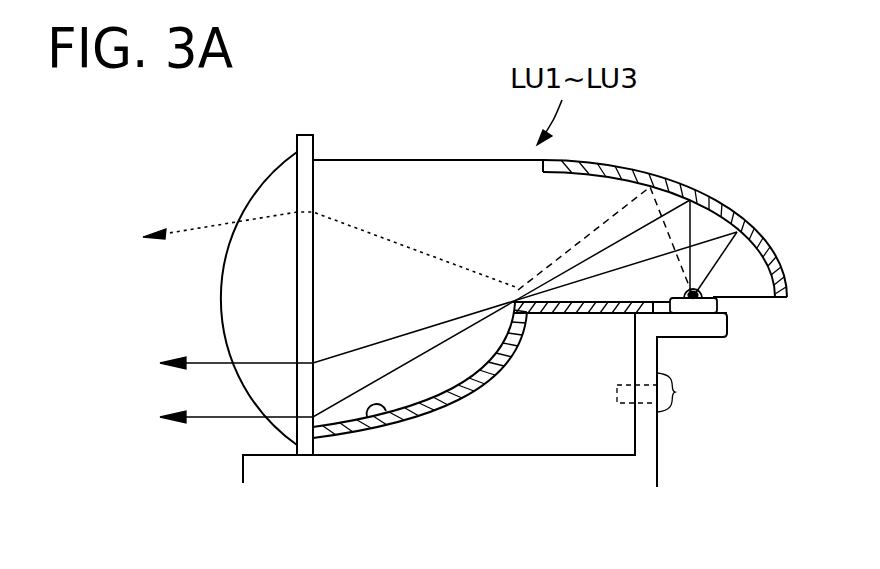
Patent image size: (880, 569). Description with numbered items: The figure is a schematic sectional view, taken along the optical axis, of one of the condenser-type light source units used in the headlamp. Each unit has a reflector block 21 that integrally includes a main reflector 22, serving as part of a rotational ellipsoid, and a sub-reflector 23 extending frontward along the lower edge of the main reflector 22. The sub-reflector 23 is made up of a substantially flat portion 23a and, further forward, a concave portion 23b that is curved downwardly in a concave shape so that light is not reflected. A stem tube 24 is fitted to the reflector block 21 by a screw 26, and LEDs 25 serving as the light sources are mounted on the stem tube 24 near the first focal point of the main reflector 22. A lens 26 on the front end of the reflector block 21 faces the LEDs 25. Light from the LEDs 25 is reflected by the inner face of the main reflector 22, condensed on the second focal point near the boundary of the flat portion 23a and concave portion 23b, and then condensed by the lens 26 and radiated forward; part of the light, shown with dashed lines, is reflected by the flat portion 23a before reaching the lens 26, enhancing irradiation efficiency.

The reflector block 21 is at (593, 423).
The main reflector 22 is at (737, 217).
The sub-reflector 23 is at (463, 385).
The flat portion 23a is at (585, 300).
The concave portion 23b is at (362, 440).
The stem tube 24 is at (690, 330).
The LED 25 is at (730, 302).
The lens 26 is at (262, 198).